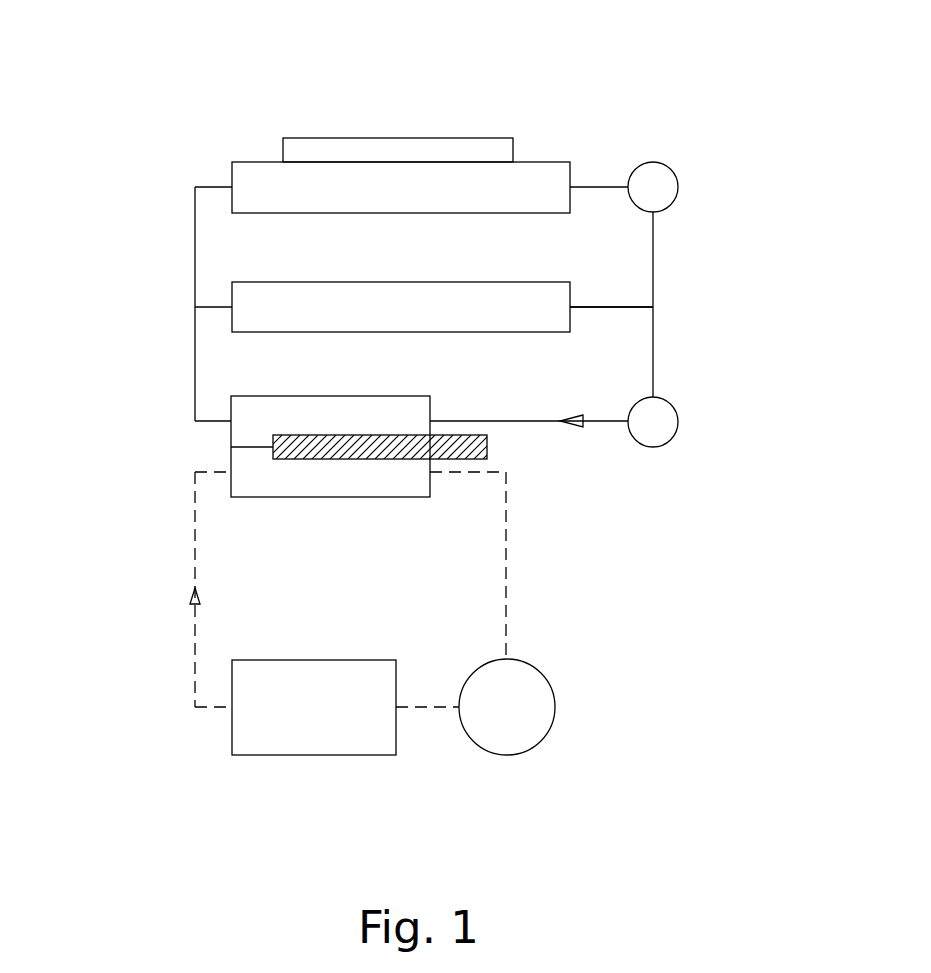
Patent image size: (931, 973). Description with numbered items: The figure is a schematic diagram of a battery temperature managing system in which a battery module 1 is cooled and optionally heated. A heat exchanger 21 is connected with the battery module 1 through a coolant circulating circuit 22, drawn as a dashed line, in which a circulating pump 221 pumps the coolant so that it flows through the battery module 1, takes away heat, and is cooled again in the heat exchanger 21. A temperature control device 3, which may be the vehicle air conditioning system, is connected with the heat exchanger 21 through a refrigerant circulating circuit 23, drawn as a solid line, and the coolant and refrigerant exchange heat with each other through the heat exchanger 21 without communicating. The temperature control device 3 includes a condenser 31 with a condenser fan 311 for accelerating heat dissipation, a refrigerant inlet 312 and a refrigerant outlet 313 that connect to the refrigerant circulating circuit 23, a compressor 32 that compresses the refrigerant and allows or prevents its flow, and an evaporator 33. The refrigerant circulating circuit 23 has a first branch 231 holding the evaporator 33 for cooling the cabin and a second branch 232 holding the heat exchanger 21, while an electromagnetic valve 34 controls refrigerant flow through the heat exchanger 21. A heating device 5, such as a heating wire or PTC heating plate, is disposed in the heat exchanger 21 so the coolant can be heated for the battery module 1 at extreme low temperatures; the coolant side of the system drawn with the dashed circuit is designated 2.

The battery module 1 is at (243, 735).
The cooling circulation module 2 is at (178, 478).
The heat exchanger 21 is at (235, 440).
The coolant circulating circuit 22 is at (195, 638).
The circulating pump 221 is at (510, 708).
The refrigerant circulating circuit 23 is at (195, 298).
The first branch 231 is at (612, 307).
The second branch 232 is at (487, 420).
The temperature control device 3 is at (165, 80).
The condenser 31 is at (280, 185).
The condenser fan 311 is at (423, 145).
The refrigerant inlet 312 is at (232, 187).
The refrigerant outlet 313 is at (572, 186).
The compressor 32 is at (653, 177).
The evaporator 33 is at (345, 298).
The electromagnetic valve 34 is at (652, 418).
The heating device 5 is at (487, 447).